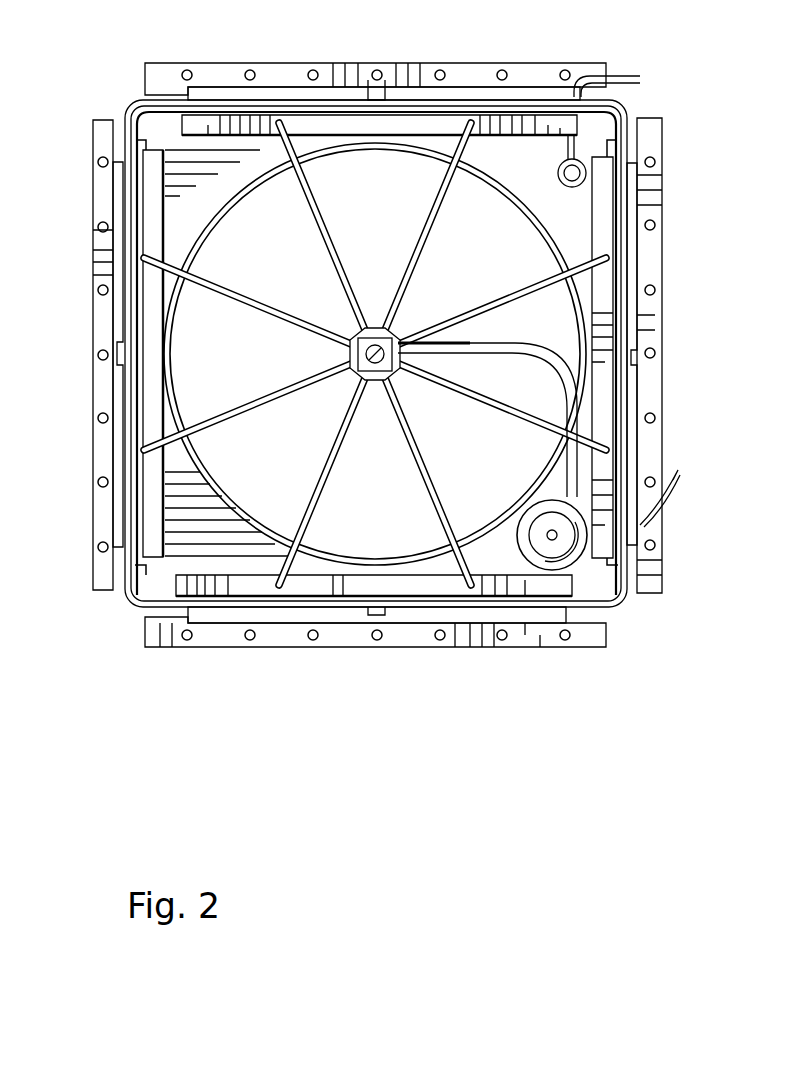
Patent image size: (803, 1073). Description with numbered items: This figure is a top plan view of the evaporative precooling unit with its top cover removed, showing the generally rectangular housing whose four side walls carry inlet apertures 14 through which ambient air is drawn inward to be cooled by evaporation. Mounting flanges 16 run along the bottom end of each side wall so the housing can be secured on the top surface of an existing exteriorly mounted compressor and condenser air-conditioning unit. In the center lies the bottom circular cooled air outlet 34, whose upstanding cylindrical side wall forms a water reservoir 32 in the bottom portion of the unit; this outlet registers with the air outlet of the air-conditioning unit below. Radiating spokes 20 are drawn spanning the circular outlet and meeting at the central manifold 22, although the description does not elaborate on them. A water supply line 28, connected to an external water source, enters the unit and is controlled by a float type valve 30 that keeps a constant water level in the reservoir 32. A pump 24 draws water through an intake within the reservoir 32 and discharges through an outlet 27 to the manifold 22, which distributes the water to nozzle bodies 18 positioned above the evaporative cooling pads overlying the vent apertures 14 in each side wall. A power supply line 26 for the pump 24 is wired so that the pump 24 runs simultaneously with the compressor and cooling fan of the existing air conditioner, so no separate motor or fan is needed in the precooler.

The inlet apertures 14 is at (327, 93).
The mounting flanges 16 is at (218, 78).
The nozzle bodies 18 is at (355, 122).
The spoke 20 is at (437, 227).
The manifold 22 is at (348, 380).
The pump 24 is at (540, 537).
The power supply line 26 is at (676, 485).
The outlet 27 is at (497, 348).
The water supply line 28 is at (627, 74).
The float type valve 30 is at (558, 178).
The water reservoir 32 is at (573, 221).
The cooled air outlet 34 is at (233, 213).